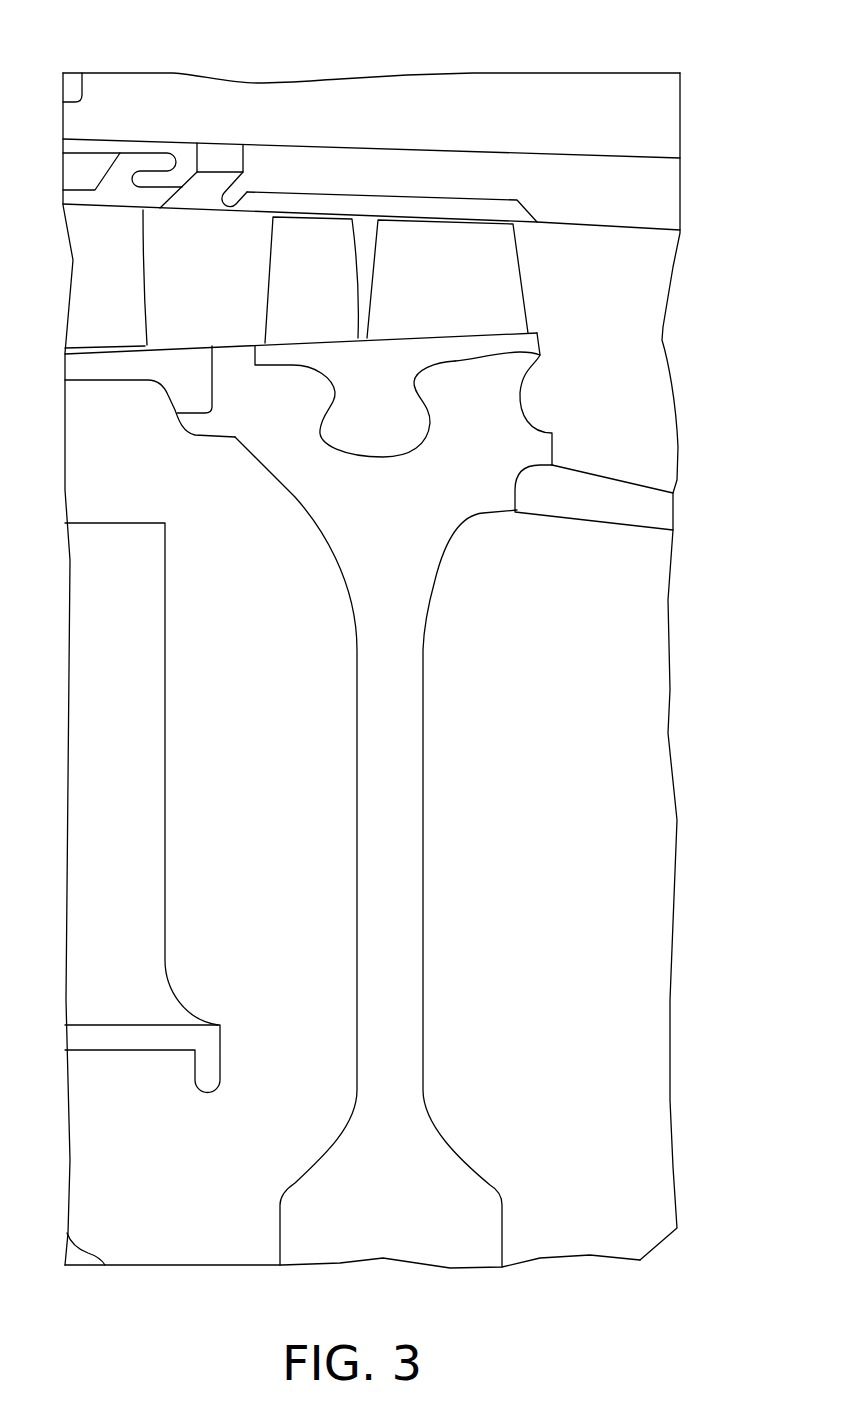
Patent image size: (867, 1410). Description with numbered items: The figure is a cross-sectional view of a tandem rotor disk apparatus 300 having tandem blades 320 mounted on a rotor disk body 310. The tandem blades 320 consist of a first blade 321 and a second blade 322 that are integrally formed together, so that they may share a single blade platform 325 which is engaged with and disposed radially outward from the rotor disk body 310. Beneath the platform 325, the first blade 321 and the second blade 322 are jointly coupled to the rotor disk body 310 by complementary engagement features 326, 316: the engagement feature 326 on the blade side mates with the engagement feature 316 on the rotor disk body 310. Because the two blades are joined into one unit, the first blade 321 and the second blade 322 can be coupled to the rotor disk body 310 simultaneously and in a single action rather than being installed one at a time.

The turbine section 300 is at (556, 712).
The rotor disk body 310 is at (410, 596).
The complementary engagement feature 316 is at (342, 452).
The tandem blades 320 is at (366, 205).
The first blade 321 is at (330, 304).
The second blade 322 is at (480, 304).
The platform 325 is at (387, 357).
The complementary engagement feature 326 is at (350, 413).